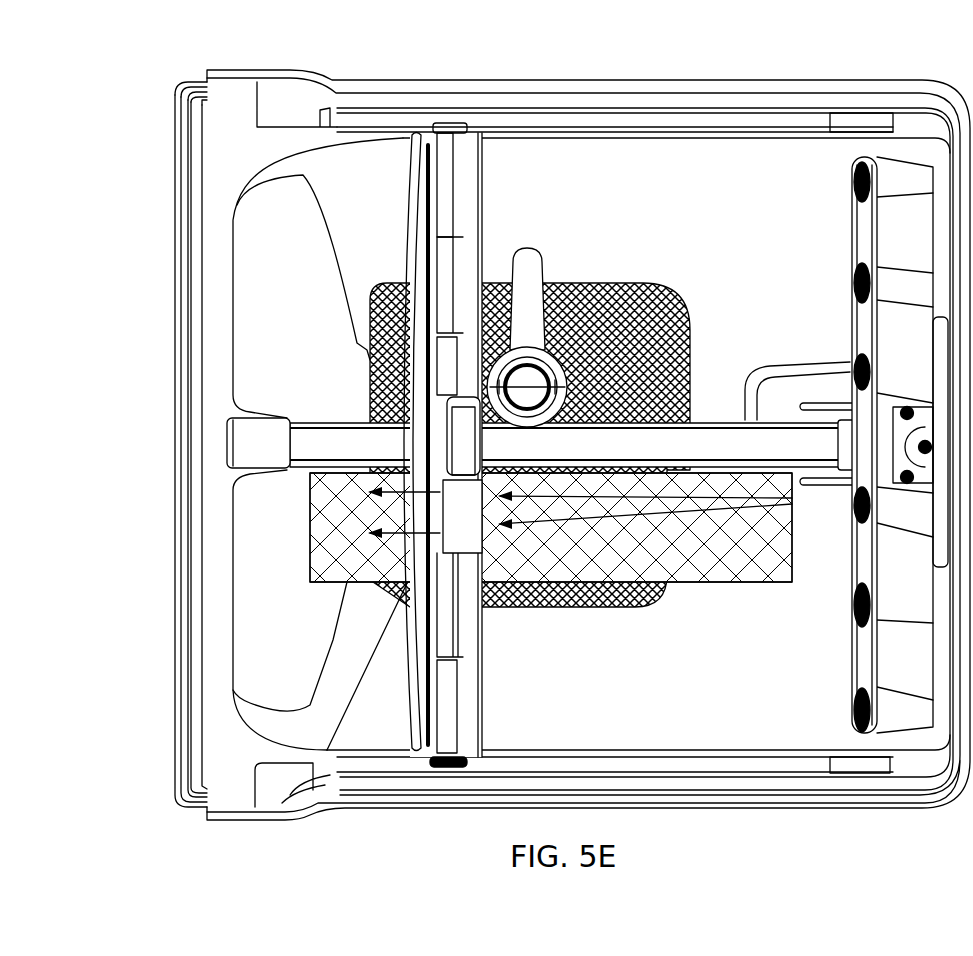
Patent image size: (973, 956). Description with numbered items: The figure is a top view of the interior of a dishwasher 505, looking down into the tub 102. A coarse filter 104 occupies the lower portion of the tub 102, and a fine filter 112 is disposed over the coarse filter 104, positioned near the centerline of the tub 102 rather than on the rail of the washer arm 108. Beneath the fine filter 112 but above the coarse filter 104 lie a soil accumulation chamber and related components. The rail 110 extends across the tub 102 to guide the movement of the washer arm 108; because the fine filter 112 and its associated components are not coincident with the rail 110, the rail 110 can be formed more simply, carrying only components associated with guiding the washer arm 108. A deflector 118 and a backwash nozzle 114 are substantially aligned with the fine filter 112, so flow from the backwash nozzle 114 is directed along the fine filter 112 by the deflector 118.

The dishwasher 505 is at (91, 105).
The tub 102 is at (751, 677).
The coarse filter 104 is at (595, 287).
The washer arm 108 is at (473, 710).
The rail 110 is at (707, 433).
The fine filter 112 is at (700, 557).
The backwash nozzle 114 is at (848, 512).
The deflector 118 is at (467, 547).